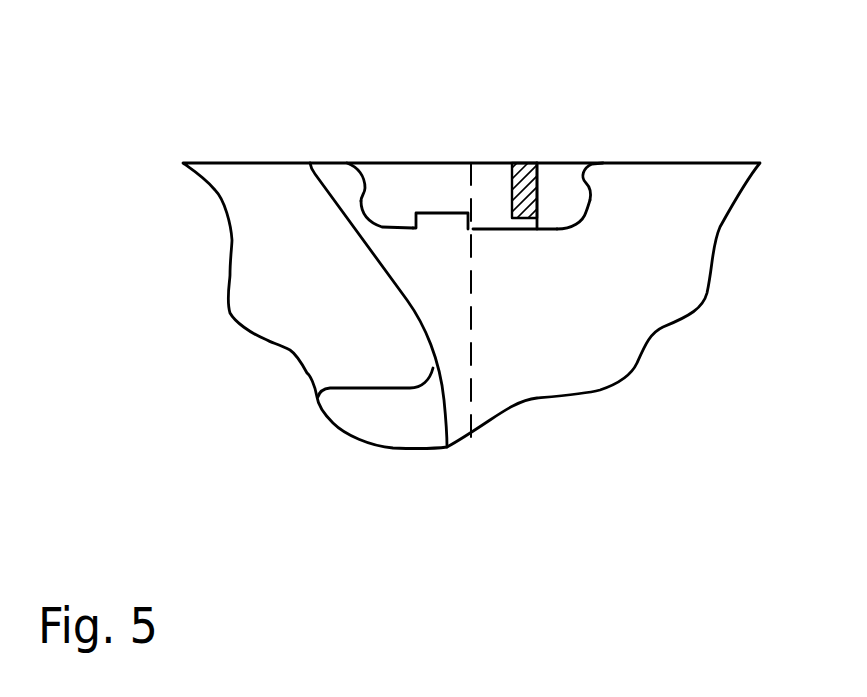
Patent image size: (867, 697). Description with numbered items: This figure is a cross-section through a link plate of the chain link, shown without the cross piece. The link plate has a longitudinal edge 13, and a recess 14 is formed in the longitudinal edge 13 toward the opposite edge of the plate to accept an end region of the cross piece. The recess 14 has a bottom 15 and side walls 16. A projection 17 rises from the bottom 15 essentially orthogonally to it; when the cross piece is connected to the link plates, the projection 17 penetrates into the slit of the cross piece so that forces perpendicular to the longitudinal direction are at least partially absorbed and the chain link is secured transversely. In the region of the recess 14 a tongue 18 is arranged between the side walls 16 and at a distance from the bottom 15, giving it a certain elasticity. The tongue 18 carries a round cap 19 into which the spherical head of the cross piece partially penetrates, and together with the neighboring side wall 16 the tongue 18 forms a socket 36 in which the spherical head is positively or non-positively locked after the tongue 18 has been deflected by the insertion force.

The longitudinal edge 13 is at (692, 163).
The recess 14 is at (414, 183).
The bottom 15 is at (482, 231).
The side walls 16 is at (358, 195).
The projection 17 is at (443, 212).
The tongue 18 is at (523, 162).
The round cap 19 is at (540, 222).
The socket 36 is at (562, 198).